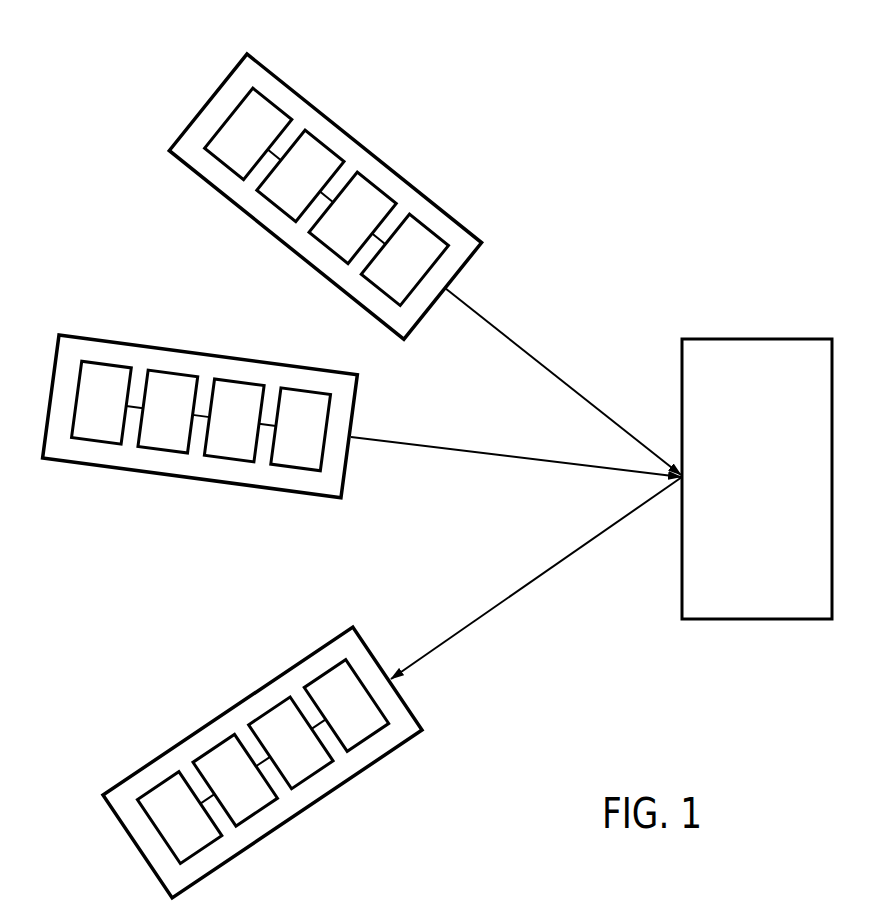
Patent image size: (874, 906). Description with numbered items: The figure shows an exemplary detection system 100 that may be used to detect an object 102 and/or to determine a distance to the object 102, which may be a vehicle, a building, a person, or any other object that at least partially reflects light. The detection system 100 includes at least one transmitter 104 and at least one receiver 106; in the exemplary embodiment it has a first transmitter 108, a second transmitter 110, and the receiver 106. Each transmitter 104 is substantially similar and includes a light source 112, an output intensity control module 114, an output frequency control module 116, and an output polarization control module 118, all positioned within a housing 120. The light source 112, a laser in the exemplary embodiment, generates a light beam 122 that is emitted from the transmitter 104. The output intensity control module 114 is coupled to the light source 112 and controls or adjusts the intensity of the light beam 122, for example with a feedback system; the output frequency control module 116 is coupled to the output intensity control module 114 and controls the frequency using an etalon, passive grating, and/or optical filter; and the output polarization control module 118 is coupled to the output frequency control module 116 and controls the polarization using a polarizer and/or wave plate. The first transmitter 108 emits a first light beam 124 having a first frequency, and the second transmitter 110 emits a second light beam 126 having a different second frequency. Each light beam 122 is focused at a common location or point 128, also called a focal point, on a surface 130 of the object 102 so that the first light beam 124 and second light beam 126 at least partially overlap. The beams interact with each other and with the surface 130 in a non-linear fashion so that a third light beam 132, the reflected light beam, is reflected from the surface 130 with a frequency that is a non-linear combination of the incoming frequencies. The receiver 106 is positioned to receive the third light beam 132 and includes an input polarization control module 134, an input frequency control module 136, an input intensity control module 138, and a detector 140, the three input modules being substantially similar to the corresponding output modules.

The detection system 100 is at (645, 68).
The object 102 is at (765, 338).
The transmitter 104 is at (330, 70).
The receiver 106 is at (262, 762).
The first transmitter 108 is at (382, 160).
The second transmitter 110 is at (223, 356).
The light source 112 is at (68, 72).
The output intensity control module 114 is at (241, 291).
The output frequency control module 116 is at (300, 317).
The output polarization control module 118 is at (360, 342).
The housing 120 is at (462, 225).
The light beam 122 is at (528, 317).
The first light beam 124 is at (550, 372).
The second light beam 126 is at (513, 456).
The common location or point 128 is at (692, 477).
The surface 130 is at (682, 552).
The third light beam 132 is at (510, 593).
The input polarization control module 134 is at (346, 706).
The input frequency control module 136 is at (291, 743).
The input intensity control module 138 is at (235, 780).
The detector 140 is at (179, 818).